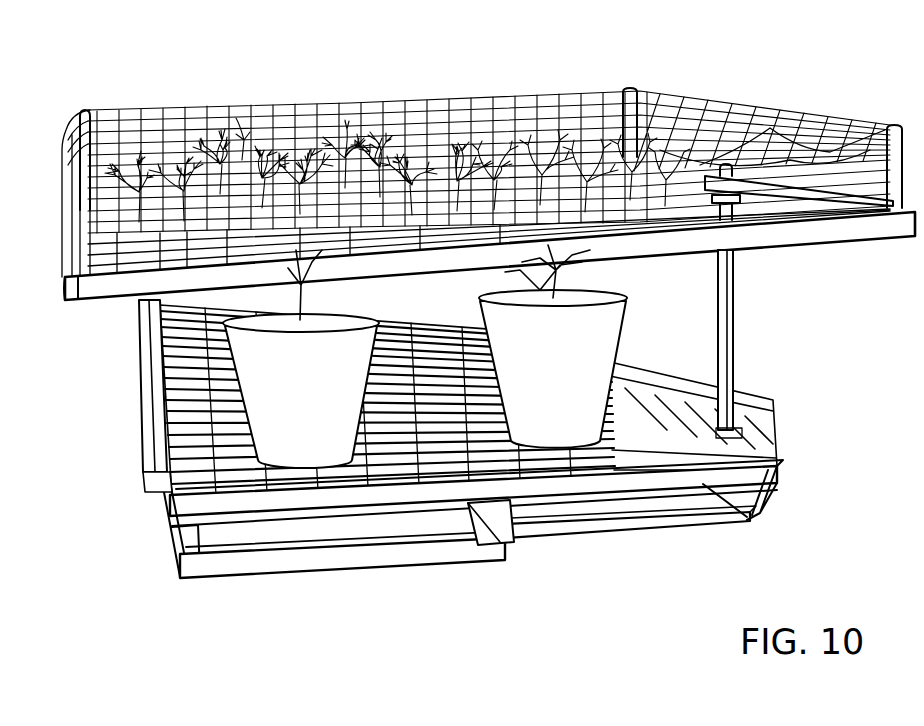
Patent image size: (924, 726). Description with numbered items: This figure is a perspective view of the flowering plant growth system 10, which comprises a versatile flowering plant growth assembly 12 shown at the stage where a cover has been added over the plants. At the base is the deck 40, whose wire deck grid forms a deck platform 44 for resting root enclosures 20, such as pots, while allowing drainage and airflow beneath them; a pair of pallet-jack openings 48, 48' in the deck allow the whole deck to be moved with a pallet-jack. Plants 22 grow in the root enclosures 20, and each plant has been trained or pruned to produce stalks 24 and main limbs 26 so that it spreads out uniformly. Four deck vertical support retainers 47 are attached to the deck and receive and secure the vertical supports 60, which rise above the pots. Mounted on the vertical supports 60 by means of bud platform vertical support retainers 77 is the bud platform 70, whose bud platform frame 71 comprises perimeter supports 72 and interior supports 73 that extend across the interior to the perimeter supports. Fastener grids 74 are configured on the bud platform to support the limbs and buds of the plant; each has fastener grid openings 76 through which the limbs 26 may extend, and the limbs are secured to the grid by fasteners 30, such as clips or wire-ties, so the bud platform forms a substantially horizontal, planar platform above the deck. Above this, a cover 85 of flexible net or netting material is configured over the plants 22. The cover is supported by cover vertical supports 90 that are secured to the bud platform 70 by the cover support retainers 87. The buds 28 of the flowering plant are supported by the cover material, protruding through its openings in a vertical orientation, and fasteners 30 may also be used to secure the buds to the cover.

The flowering plant growth system 10 is at (162, 98).
The flowering plant growth assembly 12 is at (736, 412).
The root enclosure 20 is at (600, 335).
The plant 22 is at (537, 100).
The stalk 24 is at (617, 283).
The main limb 26 is at (600, 96).
The bud 28 is at (648, 94).
The fastener 30 is at (244, 118).
The deck 40 is at (775, 515).
The deck platform 44 is at (762, 470).
The deck vertical support retainer 47 is at (140, 485).
The pallet-jack opening 48 is at (345, 567).
The pallet-jack opening 48' is at (630, 543).
The vertical support 60 is at (140, 348).
The bud platform 70 is at (885, 228).
The bud platform frame 71 is at (803, 245).
The perimeter support 72 is at (840, 245).
The interior support 73 is at (842, 147).
The fastener grid 74 is at (762, 240).
The fastener grid opening 76 is at (117, 276).
The bud platform vertical support retainer 77 is at (752, 182).
The cover 85 is at (728, 165).
The cover support retainer 87 is at (63, 283).
The cover vertical support 90 is at (64, 182).